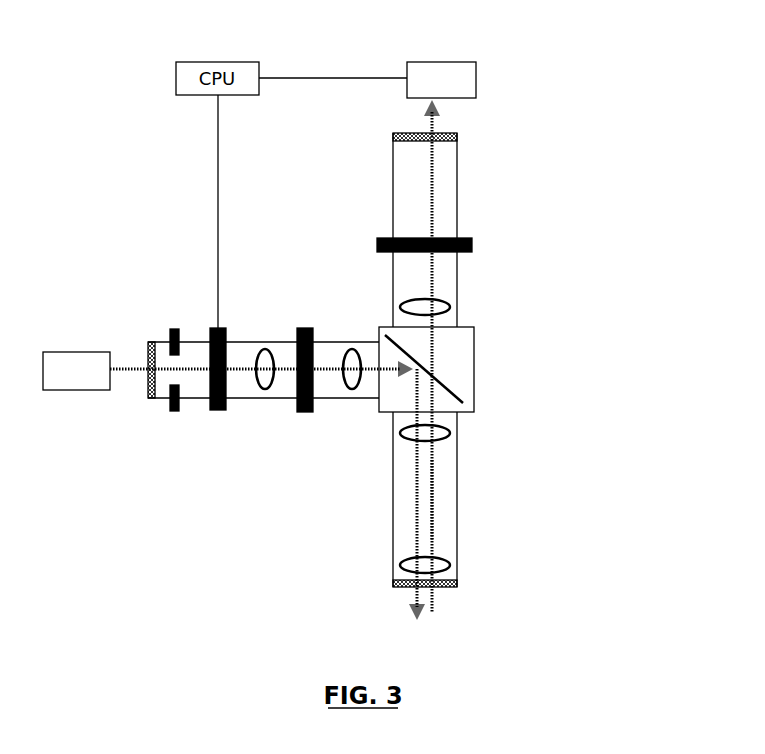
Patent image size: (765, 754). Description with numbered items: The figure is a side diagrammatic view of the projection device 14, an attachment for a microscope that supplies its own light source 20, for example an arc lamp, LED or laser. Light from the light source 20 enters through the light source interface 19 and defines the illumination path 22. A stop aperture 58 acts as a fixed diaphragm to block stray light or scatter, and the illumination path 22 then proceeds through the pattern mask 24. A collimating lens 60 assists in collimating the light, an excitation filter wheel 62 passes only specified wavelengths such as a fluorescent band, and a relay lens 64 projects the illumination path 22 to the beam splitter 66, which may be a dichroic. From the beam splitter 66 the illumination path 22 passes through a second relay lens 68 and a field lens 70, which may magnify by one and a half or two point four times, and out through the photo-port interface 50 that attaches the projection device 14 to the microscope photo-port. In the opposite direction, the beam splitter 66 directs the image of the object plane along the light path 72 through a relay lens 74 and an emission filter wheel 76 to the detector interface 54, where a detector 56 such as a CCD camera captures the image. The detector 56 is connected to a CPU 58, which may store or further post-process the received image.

The projection device 14 is at (617, 38).
The light source interface 19 is at (148, 391).
The light source 20 is at (76, 371).
The illumination path 22 is at (242, 366).
The pattern mask 24 is at (210, 408).
The photo-port interface 50 is at (457, 583).
The detector interface 54 is at (457, 134).
The detector 56 is at (441, 80).
The stop aperture 58 is at (176, 78).
The collimating lens 60 is at (262, 389).
The excitation filter wheel 62 is at (305, 412).
The relay lens 64 is at (350, 389).
The beam splitter 66 is at (463, 348).
The second relay lens 68 is at (450, 433).
The field lens 70 is at (450, 565).
The light path 72 is at (432, 497).
The relay lens 74 is at (450, 307).
The emission filter wheel 76 is at (472, 245).